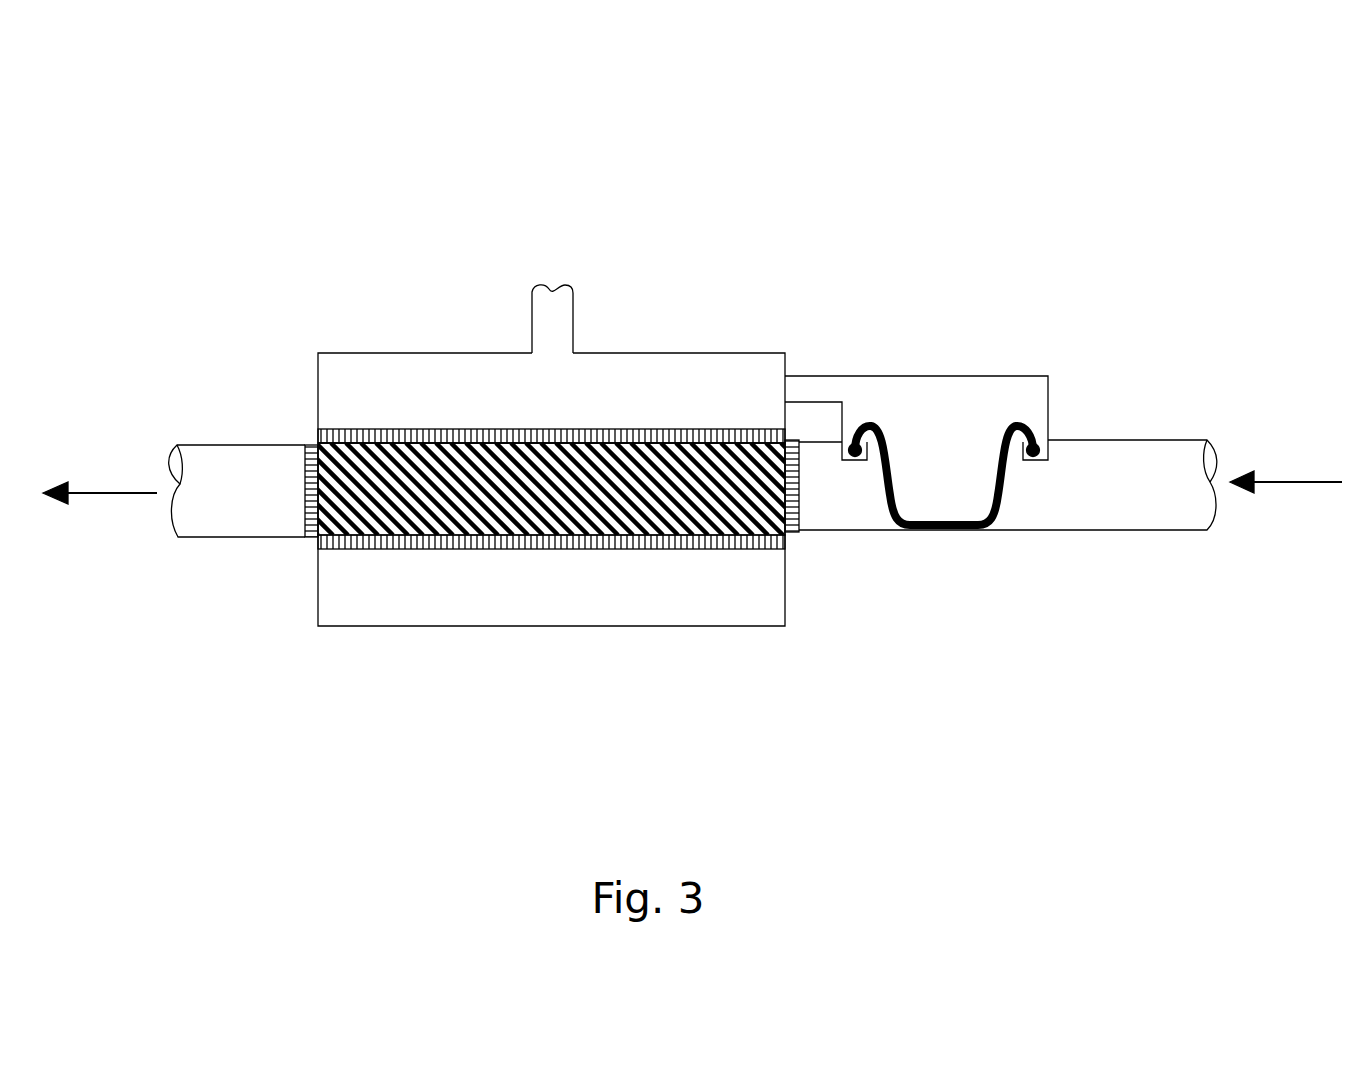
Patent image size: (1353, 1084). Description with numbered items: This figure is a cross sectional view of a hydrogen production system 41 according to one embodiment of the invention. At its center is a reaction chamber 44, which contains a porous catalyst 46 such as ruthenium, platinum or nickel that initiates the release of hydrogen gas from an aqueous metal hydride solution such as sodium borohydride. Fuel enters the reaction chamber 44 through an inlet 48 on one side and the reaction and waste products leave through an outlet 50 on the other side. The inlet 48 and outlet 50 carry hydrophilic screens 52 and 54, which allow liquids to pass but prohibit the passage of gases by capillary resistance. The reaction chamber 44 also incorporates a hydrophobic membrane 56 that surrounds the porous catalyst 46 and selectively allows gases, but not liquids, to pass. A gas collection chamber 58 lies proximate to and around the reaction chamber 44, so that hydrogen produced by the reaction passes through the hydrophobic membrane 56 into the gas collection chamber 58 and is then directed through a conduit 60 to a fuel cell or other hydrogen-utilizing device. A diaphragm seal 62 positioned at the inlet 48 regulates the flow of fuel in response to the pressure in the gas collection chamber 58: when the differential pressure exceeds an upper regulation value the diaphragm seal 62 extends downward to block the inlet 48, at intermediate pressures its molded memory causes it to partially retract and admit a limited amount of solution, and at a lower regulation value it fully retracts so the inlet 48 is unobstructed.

The hydrogen production system 41 is at (400, 326).
The reaction chamber 44 is at (630, 443).
The porous catalyst 46 is at (417, 510).
The inlet 48 is at (1135, 467).
The outlet 50 is at (235, 472).
The hydrophilic screen 52 is at (792, 535).
The hydrophilic screen 54 is at (305, 445).
The hydrophobic membrane 56 is at (713, 430).
The gas collection chamber 58 is at (683, 489).
The conduit 60 is at (573, 312).
The diaphragm seal 62 is at (888, 442).